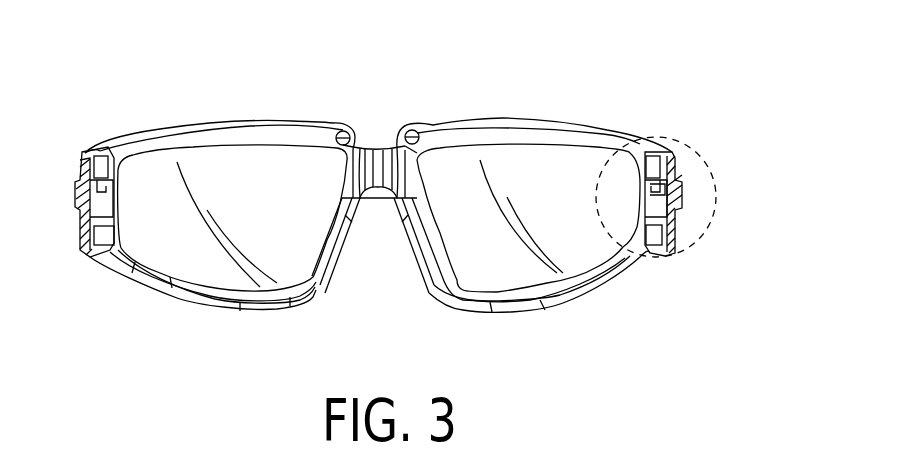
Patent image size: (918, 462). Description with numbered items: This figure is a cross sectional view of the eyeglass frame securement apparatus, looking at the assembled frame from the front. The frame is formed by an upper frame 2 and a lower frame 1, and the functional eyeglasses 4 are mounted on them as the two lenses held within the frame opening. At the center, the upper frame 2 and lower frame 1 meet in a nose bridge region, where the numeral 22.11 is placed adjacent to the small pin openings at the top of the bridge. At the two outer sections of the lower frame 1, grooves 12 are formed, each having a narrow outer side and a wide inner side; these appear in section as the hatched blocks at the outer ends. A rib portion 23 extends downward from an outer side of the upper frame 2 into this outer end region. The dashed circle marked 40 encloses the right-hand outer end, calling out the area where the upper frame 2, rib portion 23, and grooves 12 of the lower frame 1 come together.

The lower frame 1 is at (213, 303).
The upper frame 2 is at (265, 133).
The functional eyeglasses 4 is at (182, 238).
The pivot screw 22.11 is at (420, 130).
The grooves 12 is at (660, 207).
The rib portion 23 is at (667, 193).
The hinge assembly 40 is at (687, 197).